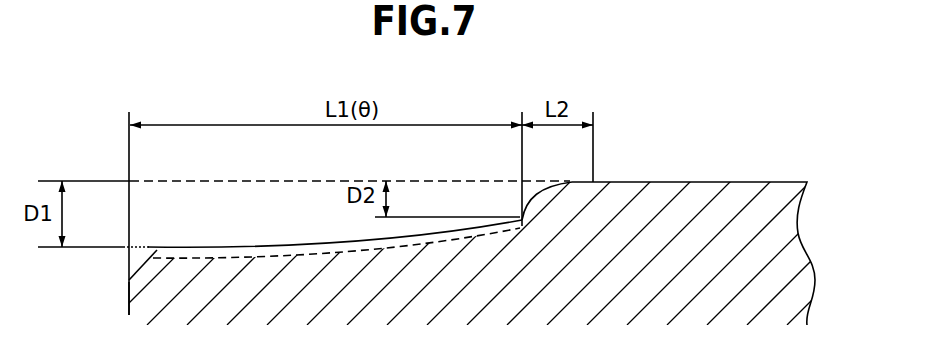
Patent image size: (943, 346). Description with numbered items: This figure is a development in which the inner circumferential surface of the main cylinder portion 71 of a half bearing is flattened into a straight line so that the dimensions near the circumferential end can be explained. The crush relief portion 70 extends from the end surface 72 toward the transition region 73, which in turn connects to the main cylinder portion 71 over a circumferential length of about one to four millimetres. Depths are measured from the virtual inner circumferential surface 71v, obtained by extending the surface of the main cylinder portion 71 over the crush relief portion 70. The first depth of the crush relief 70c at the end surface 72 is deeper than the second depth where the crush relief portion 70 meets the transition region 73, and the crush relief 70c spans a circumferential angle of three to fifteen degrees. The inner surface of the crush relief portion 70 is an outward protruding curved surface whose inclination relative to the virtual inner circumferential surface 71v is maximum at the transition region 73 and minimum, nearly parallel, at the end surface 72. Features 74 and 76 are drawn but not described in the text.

The crush relief portion 70 is at (212, 246).
The crush relief 70c is at (161, 210).
The main cylinder portion 71 is at (710, 182).
The virtual inner circumferential surface 71v is at (249, 181).
The end surface 72 is at (129, 297).
The transition region 73 is at (545, 188).
The virtual surface line 74 is at (333, 247).
The chamfer boundary 76 is at (142, 262).